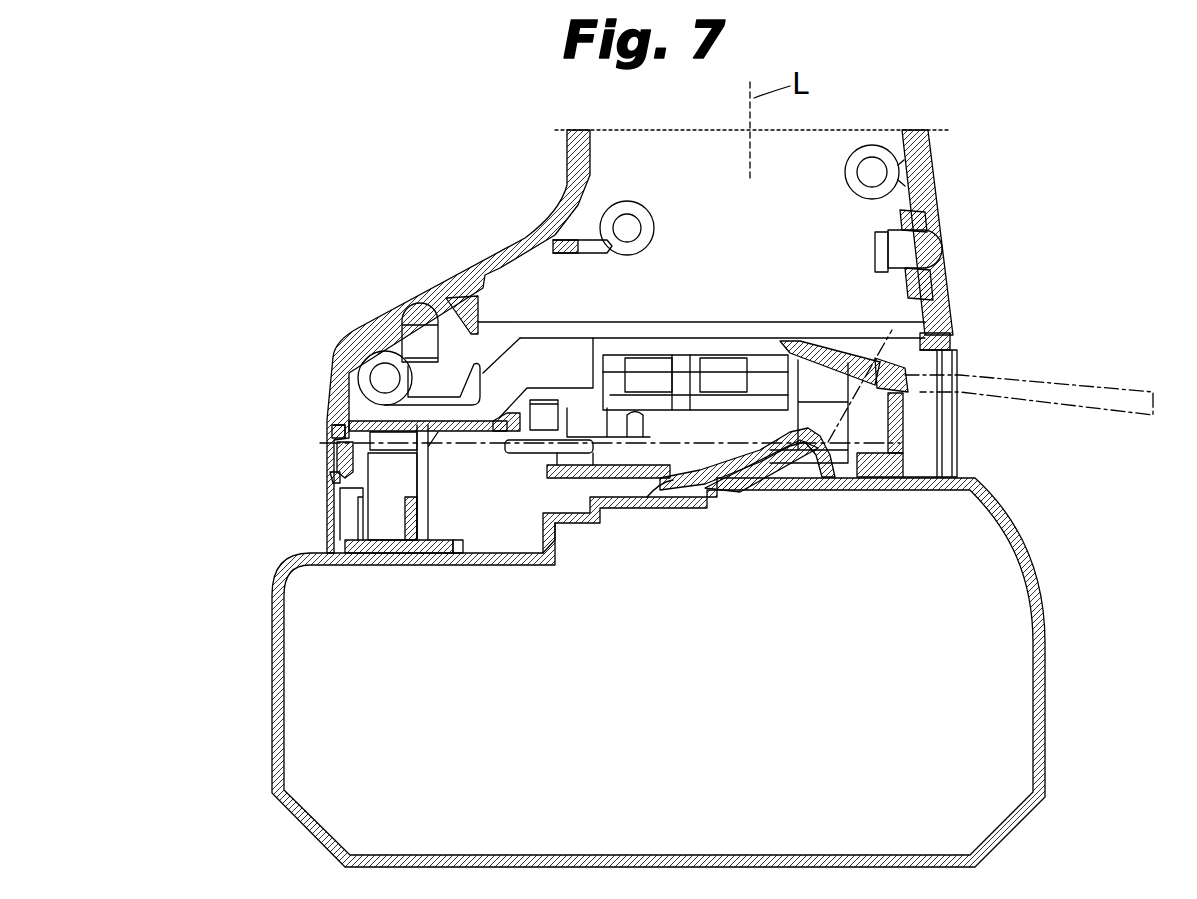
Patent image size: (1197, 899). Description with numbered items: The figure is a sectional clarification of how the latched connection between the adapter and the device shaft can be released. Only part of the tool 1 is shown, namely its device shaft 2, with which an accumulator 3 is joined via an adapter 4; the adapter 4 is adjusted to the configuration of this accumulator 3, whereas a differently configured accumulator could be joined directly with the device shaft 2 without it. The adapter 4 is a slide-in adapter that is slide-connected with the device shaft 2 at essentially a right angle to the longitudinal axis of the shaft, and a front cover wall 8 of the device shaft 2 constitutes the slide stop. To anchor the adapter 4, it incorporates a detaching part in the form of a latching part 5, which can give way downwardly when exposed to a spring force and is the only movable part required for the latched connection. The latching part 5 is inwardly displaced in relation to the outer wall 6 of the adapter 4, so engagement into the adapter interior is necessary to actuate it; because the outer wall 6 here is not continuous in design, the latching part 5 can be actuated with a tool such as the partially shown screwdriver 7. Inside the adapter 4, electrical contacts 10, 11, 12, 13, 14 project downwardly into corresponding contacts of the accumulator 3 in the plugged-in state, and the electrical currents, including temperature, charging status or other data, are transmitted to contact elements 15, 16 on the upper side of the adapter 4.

The tool 1 is at (428, 178).
The device shaft 2 is at (422, 228).
The accumulator 3 is at (272, 658).
The adapter 4 is at (305, 487).
The latching part 5 is at (880, 372).
The outer wall 6 is at (953, 337).
The screwdriver 7 is at (1103, 397).
The front cover wall 8 is at (335, 398).
The electrical contact 10 is at (440, 513).
The electrical contact 11 is at (422, 470).
The electrical contact 12 is at (422, 470).
The electrical contact 13 is at (422, 470).
The electrical contact 14 is at (440, 513).
The contact element 15 is at (695, 345).
The contact element 16 is at (695, 345).